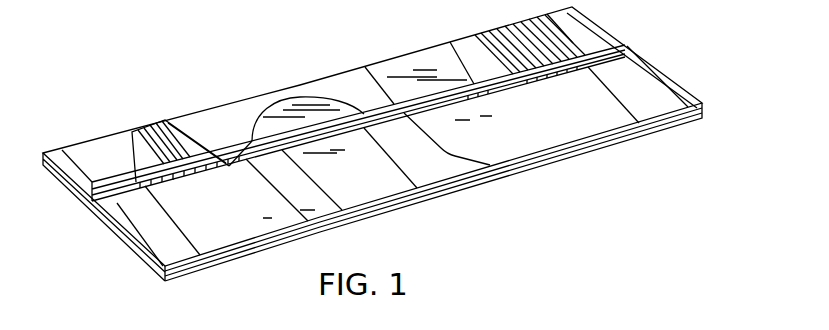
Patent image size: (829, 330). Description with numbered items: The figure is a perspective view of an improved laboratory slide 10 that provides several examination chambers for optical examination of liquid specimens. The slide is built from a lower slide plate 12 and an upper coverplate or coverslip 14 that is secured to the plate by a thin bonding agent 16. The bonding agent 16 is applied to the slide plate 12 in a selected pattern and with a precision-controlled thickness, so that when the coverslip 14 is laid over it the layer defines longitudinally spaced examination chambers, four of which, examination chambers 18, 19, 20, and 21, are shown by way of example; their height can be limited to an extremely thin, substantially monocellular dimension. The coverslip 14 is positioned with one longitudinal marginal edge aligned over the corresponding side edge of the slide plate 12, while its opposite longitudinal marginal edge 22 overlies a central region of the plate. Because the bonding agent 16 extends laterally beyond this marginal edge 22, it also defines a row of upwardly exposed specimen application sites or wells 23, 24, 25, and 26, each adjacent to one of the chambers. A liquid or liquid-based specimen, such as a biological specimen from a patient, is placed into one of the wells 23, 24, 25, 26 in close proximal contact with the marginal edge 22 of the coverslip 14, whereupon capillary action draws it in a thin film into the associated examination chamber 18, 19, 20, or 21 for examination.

The laboratory slide 10 is at (157, 86).
The lower slide plate 12 is at (72, 172).
The coverslip 14 is at (160, 270).
The bonding agent 16 is at (230, 133).
The examination chamber 18 is at (230, 218).
The examination chamber 19 is at (377, 173).
The examination chamber 20 is at (486, 137).
The examination chamber 21 is at (600, 102).
The longitudinal marginal edge 22 is at (408, 100).
The specimen application well 23 is at (144, 140).
The specimen application well 24 is at (311, 108).
The specimen application well 25 is at (437, 58).
The specimen application well 26 is at (587, 43).